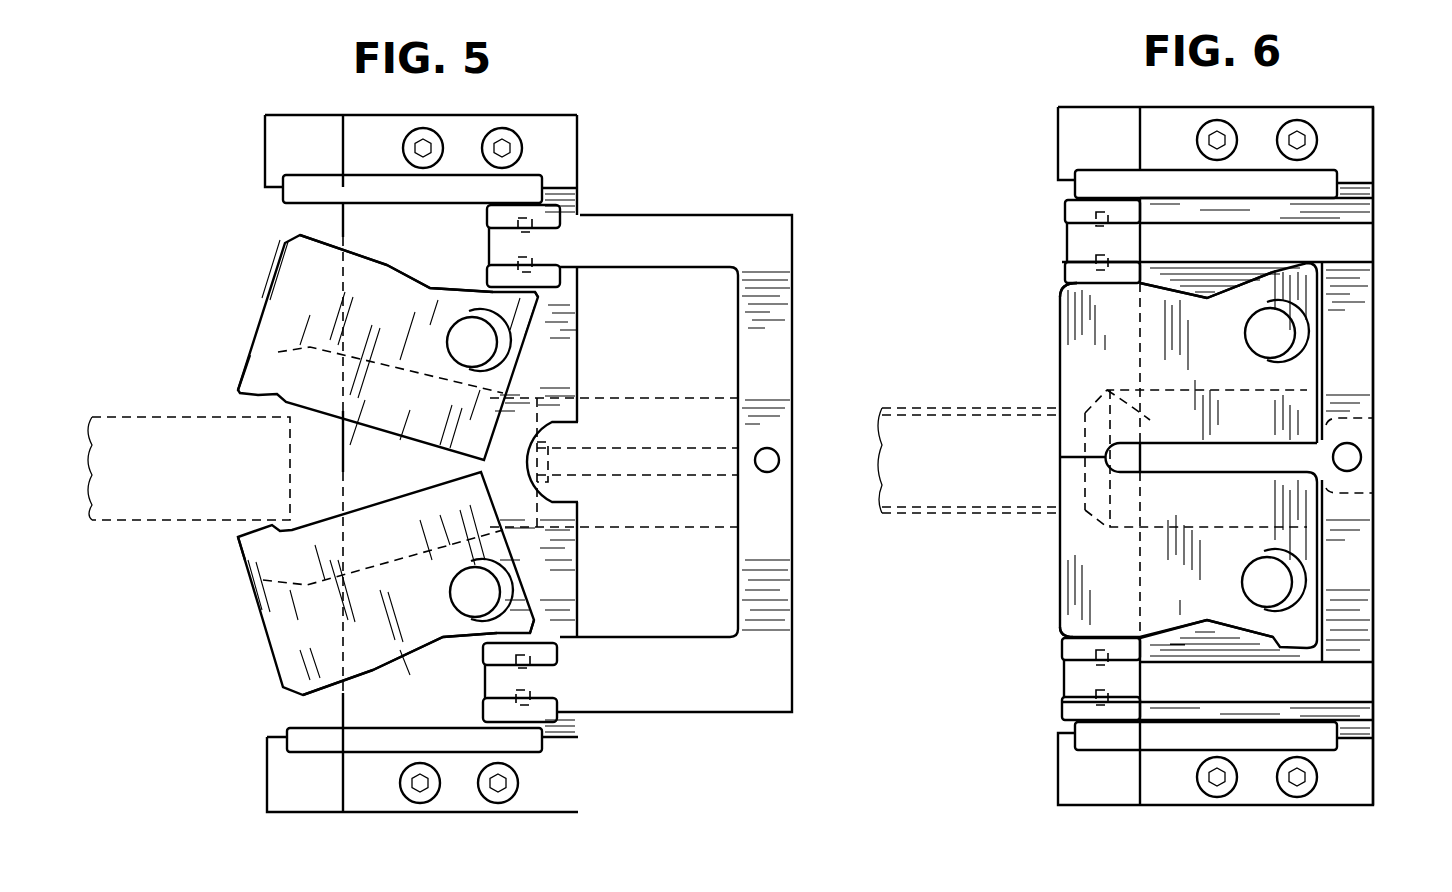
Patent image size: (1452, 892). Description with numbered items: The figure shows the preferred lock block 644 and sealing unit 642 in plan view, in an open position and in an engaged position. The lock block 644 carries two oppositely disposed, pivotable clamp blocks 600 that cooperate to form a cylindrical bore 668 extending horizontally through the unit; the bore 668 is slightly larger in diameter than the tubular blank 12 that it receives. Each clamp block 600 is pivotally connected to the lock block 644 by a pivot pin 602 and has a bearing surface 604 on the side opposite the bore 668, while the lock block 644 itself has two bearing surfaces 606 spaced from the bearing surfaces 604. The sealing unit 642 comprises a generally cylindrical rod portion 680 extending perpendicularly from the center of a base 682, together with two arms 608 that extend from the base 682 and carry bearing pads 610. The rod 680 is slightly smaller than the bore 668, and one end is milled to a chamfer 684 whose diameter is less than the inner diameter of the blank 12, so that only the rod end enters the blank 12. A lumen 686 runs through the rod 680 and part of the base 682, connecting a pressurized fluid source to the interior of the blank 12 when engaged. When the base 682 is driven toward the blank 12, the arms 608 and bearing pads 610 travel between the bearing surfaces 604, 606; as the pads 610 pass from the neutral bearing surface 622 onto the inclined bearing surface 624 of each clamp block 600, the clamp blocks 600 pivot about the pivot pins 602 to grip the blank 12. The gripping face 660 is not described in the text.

In FIG. 5, the tubular blank 12 is at (146, 446).
In FIG. 6, the tubular blank 12 is at (935, 407).
In FIG. 5, the clamp block 600 is at (312, 291).
In FIG. 6, the clamp block 600 is at (1083, 343).
In FIG. 5, the pivot pin 602 is at (490, 350).
In FIG. 6, the pivot pin 602 is at (1292, 338).
In FIG. 5, the bearing surface 604 is at (402, 282).
In FIG. 6, the bearing surface 604 is at (1177, 290).
In FIG. 5, the bearing surface 606 is at (308, 178).
In FIG. 6, the bearing surface 606 is at (1100, 188).
In FIG. 5, the arm 608 is at (707, 237).
In FIG. 6, the arm 608 is at (1357, 242).
In FIG. 5, the bearing pad 610 is at (556, 212).
In FIG. 6, the bearing pad 610 is at (1063, 206).
In FIG. 5, the neutral bearing surface 622 is at (520, 320).
In FIG. 6, the neutral bearing surface 622 is at (1253, 276).
In FIG. 5, the inclined bearing surface 624 is at (360, 256).
In FIG. 6, the inclined bearing surface 624 is at (1068, 297).
In FIG. 5, the sealing unit 642 is at (741, 465).
In FIG. 6, the sealing unit 642 is at (1377, 407).
In FIG. 5, the lock block 644 is at (585, 128).
In FIG. 6, the lock block 644 is at (1358, 128).
In FIG. 5, the jaw gripping face 660 is at (262, 362).
In FIG. 5, the cylindrical bore 668 is at (248, 558).
In FIG. 5, the rod portion 680 is at (712, 388).
In FIG. 6, the rod portion 680 is at (1232, 530).
In FIG. 5, the base 682 is at (770, 578).
In FIG. 6, the base 682 is at (1352, 312).
In FIG. 5, the chamfer 684 is at (518, 525).
In FIG. 6, the chamfer 684 is at (1062, 392).
In FIG. 5, the lumen 686 is at (640, 478).
In FIG. 6, the lumen 686 is at (1360, 478).